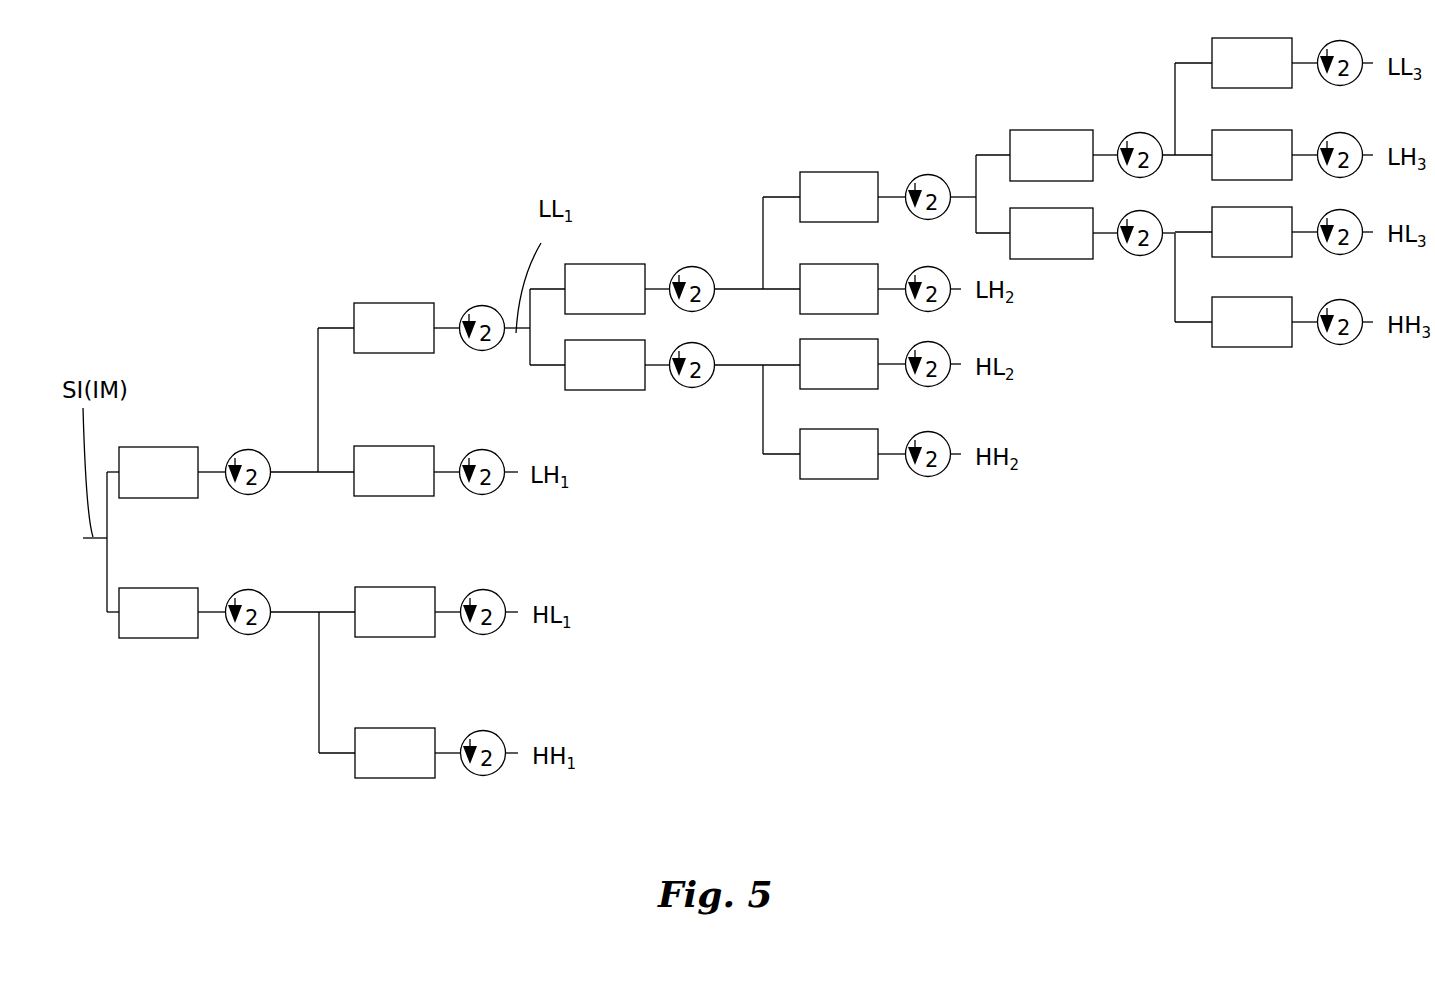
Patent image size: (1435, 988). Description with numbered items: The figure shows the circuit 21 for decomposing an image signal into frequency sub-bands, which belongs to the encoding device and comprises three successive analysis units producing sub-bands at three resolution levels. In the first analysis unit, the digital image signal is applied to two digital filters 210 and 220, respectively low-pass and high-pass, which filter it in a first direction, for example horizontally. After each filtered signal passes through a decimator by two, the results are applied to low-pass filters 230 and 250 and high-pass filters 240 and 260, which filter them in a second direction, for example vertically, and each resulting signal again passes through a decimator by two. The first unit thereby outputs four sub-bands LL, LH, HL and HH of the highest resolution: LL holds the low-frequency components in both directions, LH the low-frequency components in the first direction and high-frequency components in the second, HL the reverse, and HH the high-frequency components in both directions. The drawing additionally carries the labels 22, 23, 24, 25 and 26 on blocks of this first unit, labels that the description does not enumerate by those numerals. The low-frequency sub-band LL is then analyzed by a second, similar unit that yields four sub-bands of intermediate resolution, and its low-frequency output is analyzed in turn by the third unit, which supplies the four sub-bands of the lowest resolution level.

The circuit for decomposition into frequency sub-bands 21 is at (440, 104).
The high-pass filter 22 is at (166, 588).
The low-pass filter 23 is at (400, 303).
The high-pass filter 24 is at (400, 446).
The low-pass filter 25 is at (401, 587).
The high-pass filter 26 is at (401, 728).
The low-pass digital filter 210 is at (250, 449).
The high-pass digital filter 220 is at (250, 589).
The low-pass filter 230 is at (484, 305).
The high-pass filter 240 is at (484, 449).
The low-pass filter 250 is at (484, 589).
The high-pass filter 260 is at (484, 730).